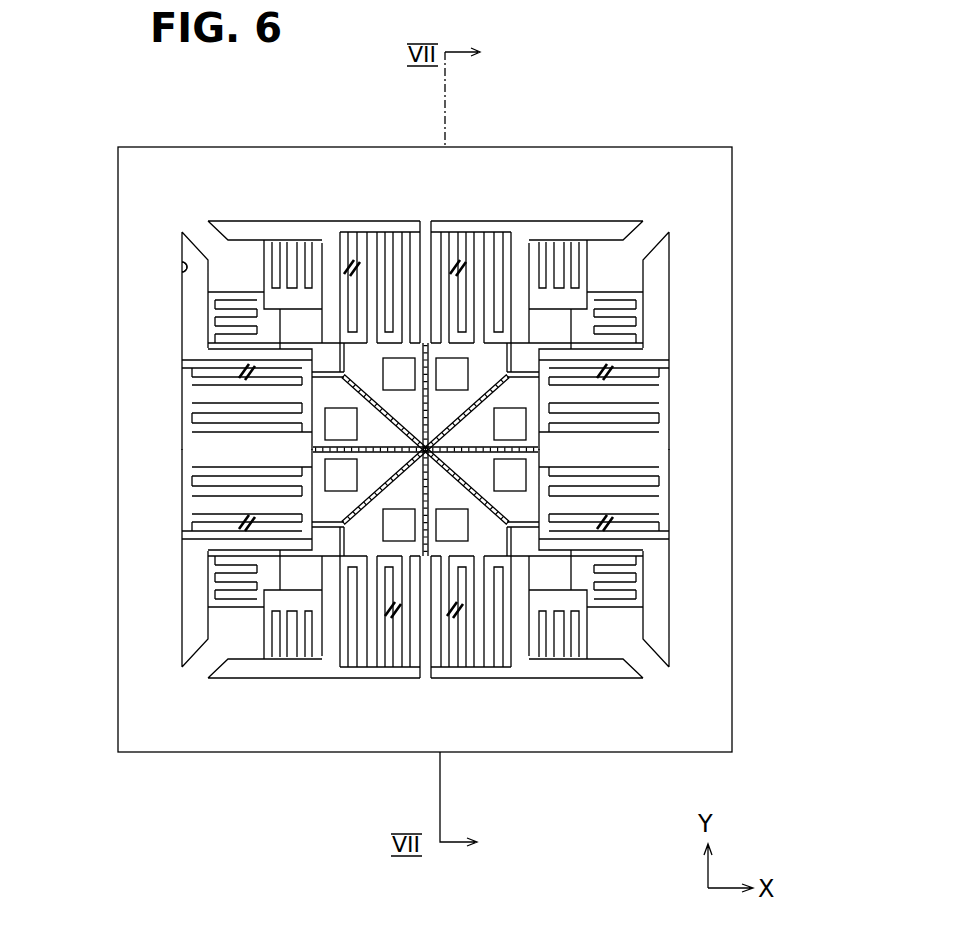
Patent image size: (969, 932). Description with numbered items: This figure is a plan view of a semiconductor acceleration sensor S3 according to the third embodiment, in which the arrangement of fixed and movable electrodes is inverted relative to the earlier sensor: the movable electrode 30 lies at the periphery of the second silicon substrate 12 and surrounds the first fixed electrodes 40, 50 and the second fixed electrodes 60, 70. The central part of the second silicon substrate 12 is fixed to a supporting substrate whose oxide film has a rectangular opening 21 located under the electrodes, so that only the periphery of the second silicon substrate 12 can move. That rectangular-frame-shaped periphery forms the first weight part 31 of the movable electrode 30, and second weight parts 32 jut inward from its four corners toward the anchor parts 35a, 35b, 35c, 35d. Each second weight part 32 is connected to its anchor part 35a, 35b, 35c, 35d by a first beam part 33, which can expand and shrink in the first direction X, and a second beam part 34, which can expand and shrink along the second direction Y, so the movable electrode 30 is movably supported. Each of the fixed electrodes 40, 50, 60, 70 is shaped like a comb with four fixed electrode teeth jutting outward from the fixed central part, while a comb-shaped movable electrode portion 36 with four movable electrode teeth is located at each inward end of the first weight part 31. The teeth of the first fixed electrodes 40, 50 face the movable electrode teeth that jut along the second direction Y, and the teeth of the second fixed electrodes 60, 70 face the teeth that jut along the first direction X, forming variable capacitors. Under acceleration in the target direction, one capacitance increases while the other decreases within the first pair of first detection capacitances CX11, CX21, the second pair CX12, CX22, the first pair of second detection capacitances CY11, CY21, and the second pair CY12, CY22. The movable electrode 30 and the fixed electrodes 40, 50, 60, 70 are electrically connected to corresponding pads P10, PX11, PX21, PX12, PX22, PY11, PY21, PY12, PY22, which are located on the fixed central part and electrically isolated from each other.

The second silicon substrate 12 is at (216, 129).
The rectangular opening 21 is at (182, 264).
The movable electrode 30 is at (245, 172).
The first weight part 31 is at (145, 175).
The second weight part 32 is at (243, 245).
The first beam part 33 is at (262, 250).
The second beam part 34 is at (190, 300).
The anchor part 35a is at (318, 325).
The anchor part 35b is at (640, 315).
The anchor part 35c is at (590, 552).
The anchor part 35d is at (250, 598).
The movable electrode portion 36 is at (330, 332).
The first fixed electrode 40 is at (440, 556).
The first fixed electrode 50 is at (390, 285).
The second fixed electrode 60 is at (640, 396).
The second fixed electrode 70 is at (235, 520).
The pad P10 is at (548, 325).
The semiconductor acceleration sensor S3 is at (747, 142).
The first detection capacitance CX11 is at (385, 650).
The first detection capacitance CX12 is at (508, 300).
The first detection capacitance CX21 is at (470, 622).
The first detection capacitance CX22 is at (355, 300).
The second detection capacitance CY11 is at (605, 523).
The second detection capacitance CY12 is at (245, 372).
The second detection capacitance CY21 is at (605, 372).
The second detection capacitance CY22 is at (245, 523).
The pad PX11 is at (395, 532).
The pad PX12 is at (457, 370).
The pad PX21 is at (448, 532).
The pad PX22 is at (409, 370).
The pad PY11 is at (510, 470).
The pad PY12 is at (330, 427).
The pad PY21 is at (510, 427).
The pad PY22 is at (330, 470).